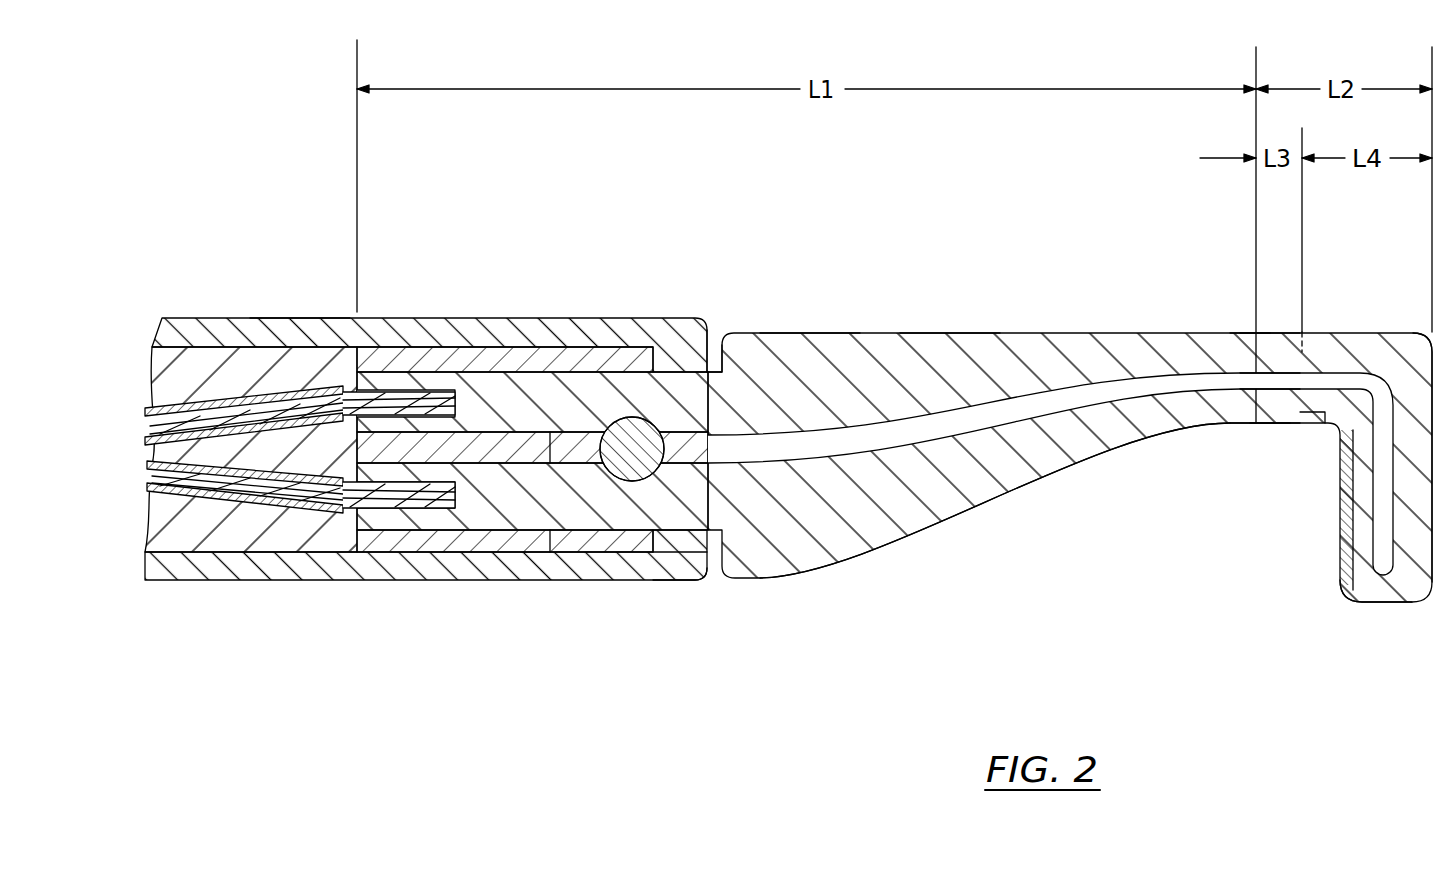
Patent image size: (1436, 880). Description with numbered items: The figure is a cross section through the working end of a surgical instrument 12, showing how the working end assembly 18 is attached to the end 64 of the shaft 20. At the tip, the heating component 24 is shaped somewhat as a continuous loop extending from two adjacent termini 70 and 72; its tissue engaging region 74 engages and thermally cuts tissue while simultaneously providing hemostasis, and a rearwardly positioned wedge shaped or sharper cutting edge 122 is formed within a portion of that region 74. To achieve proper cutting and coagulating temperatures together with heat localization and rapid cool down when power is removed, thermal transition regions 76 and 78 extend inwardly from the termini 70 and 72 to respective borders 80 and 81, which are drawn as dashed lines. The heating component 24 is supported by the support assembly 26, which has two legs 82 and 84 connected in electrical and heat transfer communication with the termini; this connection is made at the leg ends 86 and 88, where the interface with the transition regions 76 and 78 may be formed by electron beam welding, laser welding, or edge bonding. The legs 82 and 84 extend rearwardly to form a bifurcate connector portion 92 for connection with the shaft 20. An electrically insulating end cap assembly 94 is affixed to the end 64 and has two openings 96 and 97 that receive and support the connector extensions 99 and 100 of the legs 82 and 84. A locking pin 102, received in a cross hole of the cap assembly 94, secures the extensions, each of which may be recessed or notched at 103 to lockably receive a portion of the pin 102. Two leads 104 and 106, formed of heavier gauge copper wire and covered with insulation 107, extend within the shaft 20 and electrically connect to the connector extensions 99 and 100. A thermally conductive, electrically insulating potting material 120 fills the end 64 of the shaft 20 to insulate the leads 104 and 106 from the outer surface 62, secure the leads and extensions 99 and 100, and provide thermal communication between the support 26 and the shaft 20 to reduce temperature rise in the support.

The electrical connector assembly 12 is at (292, 194).
The working end assembly 18 is at (812, 208).
The shaft 20 is at (280, 600).
The heating component 24 is at (1410, 300).
The support assembly 26 is at (960, 327).
The outer surface 62 is at (447, 335).
The end 64 is at (710, 606).
The terminus 70 is at (1255, 330).
The terminus 72 is at (1257, 425).
The tissue engaging region 74 is at (1380, 607).
The thermal transition region 76 is at (1268, 326).
The thermal transition region 78 is at (1268, 428).
The border 80 is at (1320, 340).
The border 81 is at (1280, 430).
The leg 82 is at (845, 360).
The leg 84 is at (932, 487).
The leg end 86 is at (1250, 362).
The leg end 88 is at (1250, 413).
The bifurcate connector portion 92 is at (722, 325).
The end cap assembly 94 is at (697, 330).
The opening 96 is at (688, 345).
The opening 97 is at (675, 567).
The connector extension 99 is at (500, 400).
The connector extension 100 is at (500, 495).
The locking pin 102 is at (622, 462).
The notch 103 is at (632, 417).
The lead 104 is at (420, 398).
The lead 106 is at (389, 498).
The insulation 107 is at (183, 350).
The potting material 120 is at (257, 370).
The cutting edge 122 is at (1340, 578).